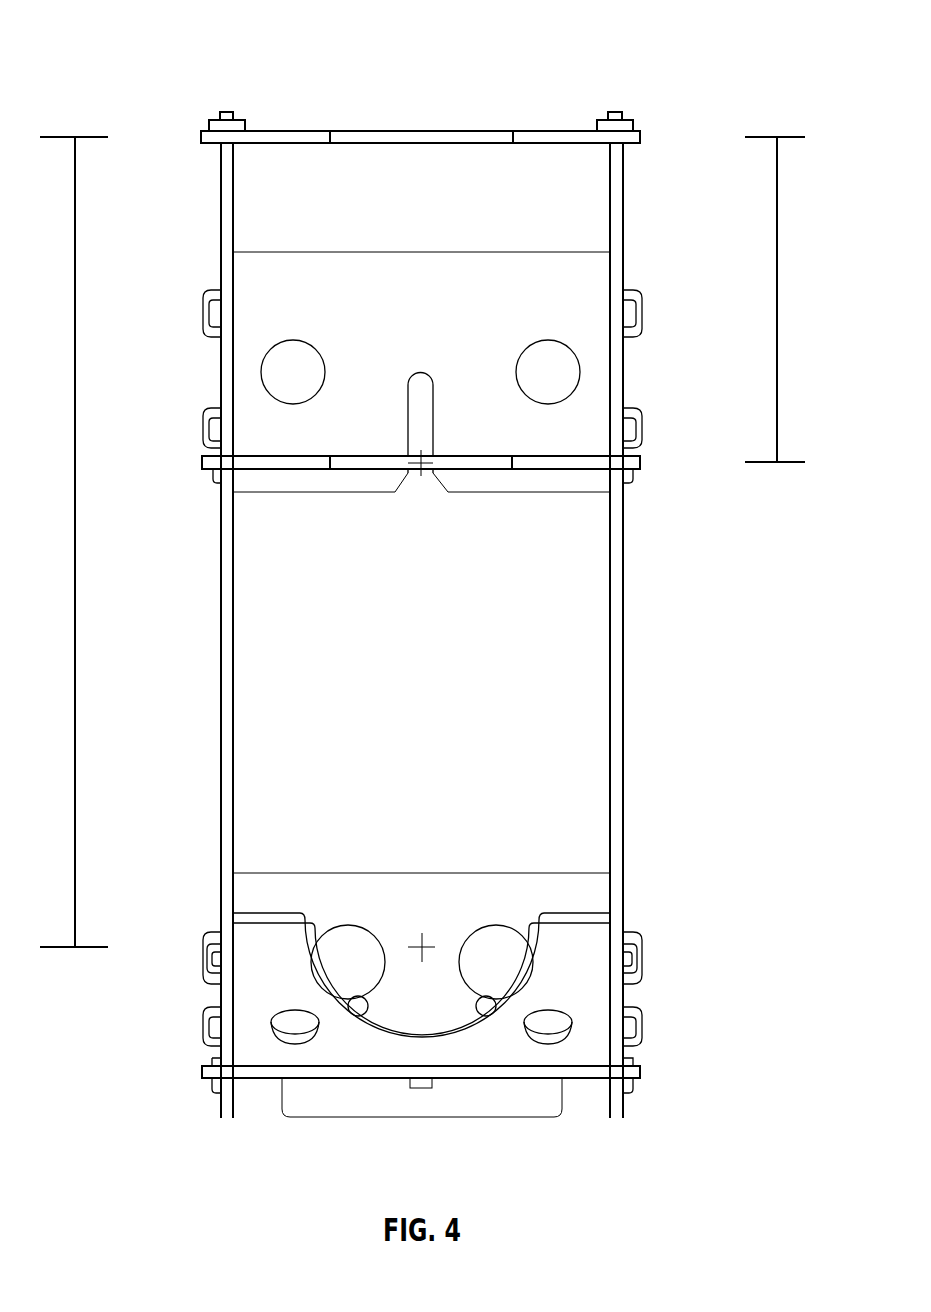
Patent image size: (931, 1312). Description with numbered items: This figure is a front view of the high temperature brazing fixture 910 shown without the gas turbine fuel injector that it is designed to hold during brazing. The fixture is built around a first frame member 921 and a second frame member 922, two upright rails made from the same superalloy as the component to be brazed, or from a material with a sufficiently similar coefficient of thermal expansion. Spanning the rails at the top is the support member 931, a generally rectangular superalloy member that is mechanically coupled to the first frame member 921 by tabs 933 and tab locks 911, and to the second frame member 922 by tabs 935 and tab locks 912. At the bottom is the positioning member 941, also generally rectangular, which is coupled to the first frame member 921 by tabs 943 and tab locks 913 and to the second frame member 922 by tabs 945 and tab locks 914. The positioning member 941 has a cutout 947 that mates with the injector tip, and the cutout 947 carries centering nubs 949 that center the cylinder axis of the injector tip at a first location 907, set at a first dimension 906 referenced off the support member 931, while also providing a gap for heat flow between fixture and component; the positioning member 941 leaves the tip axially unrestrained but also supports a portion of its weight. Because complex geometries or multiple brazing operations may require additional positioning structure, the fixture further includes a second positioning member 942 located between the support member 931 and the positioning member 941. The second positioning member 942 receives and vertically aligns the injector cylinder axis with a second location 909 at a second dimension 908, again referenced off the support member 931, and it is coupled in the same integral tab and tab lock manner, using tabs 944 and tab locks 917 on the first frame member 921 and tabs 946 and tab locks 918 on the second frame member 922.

The high temperature brazing fixture 910 is at (172, 36).
The first dimension 906 is at (74, 542).
The second dimension 908 is at (775, 299).
The first location 907 is at (428, 945).
The second location 909 is at (425, 471).
The tab lock 911 is at (637, 129).
The tab lock 912 is at (247, 127).
The tab lock 913 is at (636, 960).
The tab lock 914 is at (209, 960).
The tab lock 917 is at (631, 479).
The tab lock 918 is at (215, 478).
The first frame member 921 is at (623, 664).
The second frame member 922 is at (221, 664).
The support member 931 is at (525, 131).
The tab 933 is at (616, 111).
The tab 935 is at (223, 111).
The positioning member 941 is at (597, 976).
The second positioning member 942 is at (535, 456).
The tab 943 is at (639, 932).
The tab 944 is at (645, 462).
The tab 945 is at (206, 932).
The tab 946 is at (204, 461).
The cutout 947 is at (336, 993).
The centering nubs 949 is at (478, 1010).